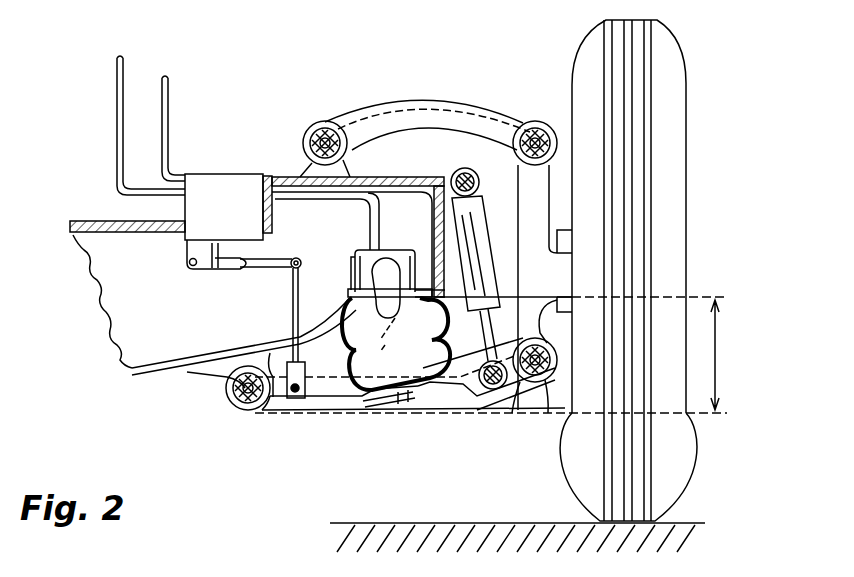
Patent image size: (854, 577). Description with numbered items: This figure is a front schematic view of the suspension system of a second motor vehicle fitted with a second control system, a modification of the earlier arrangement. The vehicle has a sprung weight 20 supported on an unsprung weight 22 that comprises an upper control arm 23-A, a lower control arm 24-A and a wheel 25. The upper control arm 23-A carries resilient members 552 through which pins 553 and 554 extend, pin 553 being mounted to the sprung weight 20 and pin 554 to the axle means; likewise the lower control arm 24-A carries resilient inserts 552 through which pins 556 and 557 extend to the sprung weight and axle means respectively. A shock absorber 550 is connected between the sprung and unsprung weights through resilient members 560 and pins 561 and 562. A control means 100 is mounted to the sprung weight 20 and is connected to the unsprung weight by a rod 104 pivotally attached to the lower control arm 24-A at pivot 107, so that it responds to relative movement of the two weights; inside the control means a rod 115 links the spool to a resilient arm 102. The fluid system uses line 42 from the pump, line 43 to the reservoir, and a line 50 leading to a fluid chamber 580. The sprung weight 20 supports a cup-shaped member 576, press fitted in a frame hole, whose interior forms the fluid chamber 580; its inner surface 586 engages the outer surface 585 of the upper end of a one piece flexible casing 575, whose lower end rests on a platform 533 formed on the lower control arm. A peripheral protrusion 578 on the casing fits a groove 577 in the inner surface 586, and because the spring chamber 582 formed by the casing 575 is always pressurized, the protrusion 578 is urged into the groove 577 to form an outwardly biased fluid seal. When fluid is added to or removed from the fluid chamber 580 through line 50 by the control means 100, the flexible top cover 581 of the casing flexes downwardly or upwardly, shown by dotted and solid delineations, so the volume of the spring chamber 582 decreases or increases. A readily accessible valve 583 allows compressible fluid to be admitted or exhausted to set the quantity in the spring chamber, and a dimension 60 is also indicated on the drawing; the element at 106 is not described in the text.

The sprung weight portion 20 is at (121, 373).
The unsprung weight portion 22 is at (320, 414).
The upper control arm 23-A is at (372, 120).
The lower control arm 24-A is at (280, 412).
The wheel 25 is at (668, 52).
The line 42 is at (117, 101).
The line 43 is at (168, 102).
The line 50 is at (263, 176).
The wheel axis 60 is at (702, 297).
The control means 100 is at (170, 212).
The resilient arm 102 is at (274, 268).
The rod 104 is at (293, 312).
The pivot pin 106 is at (292, 259).
The pivot 107 is at (266, 400).
The rod 115 is at (215, 269).
The platform 533 is at (500, 415).
The shock absorber 550 is at (518, 132).
The resilient members 552 is at (305, 158).
The pin 553 is at (312, 128).
The pin 554 is at (550, 122).
The pin 556 is at (234, 406).
The pin 557 is at (526, 405).
The resilient members 560 is at (462, 170).
The pin 561 is at (452, 178).
The pin 562 is at (490, 392).
The one piece flexible casing 575 is at (430, 404).
The cup-shaped member 576 is at (416, 256).
The groove 577 is at (350, 290).
The protrusion 578 is at (356, 267).
The fluid chamber 580 is at (380, 248).
The flexible top cover 581 is at (360, 250).
The spring chamber 582 is at (346, 369).
The valve 583 is at (395, 406).
The outer surface 585 is at (447, 298).
The inner surface 586 is at (352, 300).